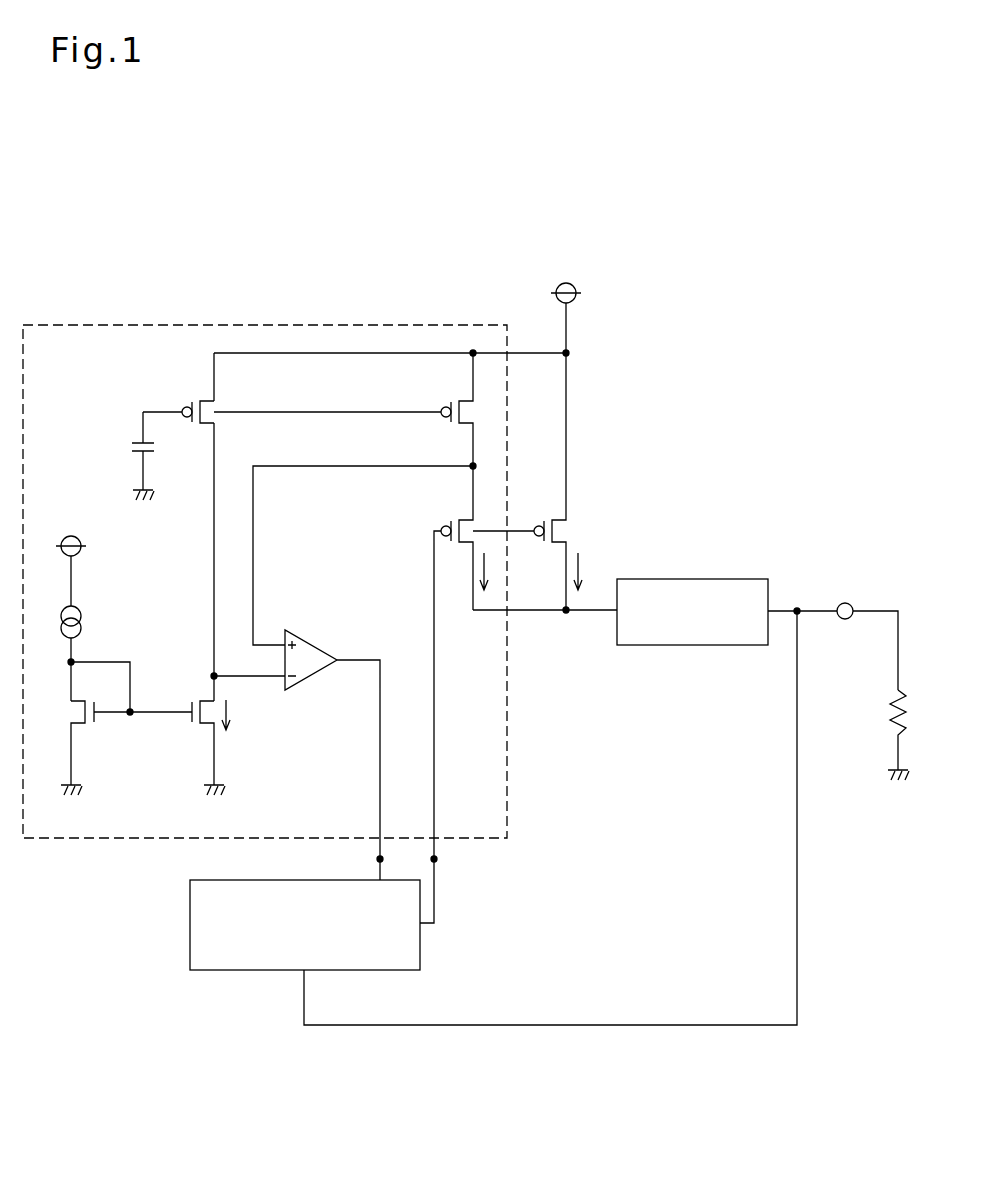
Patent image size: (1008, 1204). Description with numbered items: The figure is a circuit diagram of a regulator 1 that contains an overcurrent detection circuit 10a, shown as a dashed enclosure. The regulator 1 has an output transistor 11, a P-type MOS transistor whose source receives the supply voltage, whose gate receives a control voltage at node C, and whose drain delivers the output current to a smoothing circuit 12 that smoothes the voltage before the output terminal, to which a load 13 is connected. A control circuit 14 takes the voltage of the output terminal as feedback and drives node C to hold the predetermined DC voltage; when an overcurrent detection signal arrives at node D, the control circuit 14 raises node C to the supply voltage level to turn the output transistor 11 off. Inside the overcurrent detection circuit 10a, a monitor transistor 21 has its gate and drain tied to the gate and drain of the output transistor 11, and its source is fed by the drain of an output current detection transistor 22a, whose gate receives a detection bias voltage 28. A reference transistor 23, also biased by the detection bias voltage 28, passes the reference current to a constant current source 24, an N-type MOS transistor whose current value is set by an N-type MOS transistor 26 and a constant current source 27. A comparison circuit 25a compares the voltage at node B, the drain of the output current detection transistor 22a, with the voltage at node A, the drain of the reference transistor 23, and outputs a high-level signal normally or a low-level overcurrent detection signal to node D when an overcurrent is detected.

The regulator 1 is at (398, 240).
The overcurrent detection circuit 10a is at (176, 325).
The output transistor 11 is at (577, 530).
The smoothing circuit 12 is at (716, 577).
The load 13 is at (884, 722).
The control circuit 14 is at (428, 962).
The monitor transistor 21 is at (461, 555).
The output current detection transistor 22a is at (441, 399).
The reference transistor 23 is at (188, 398).
The constant current source 24 is at (187, 733).
The comparison circuit 25a is at (333, 640).
The N-type MOS transistor 26 is at (63, 713).
The constant current source 27 is at (60, 622).
The detection bias voltage 28 is at (166, 450).